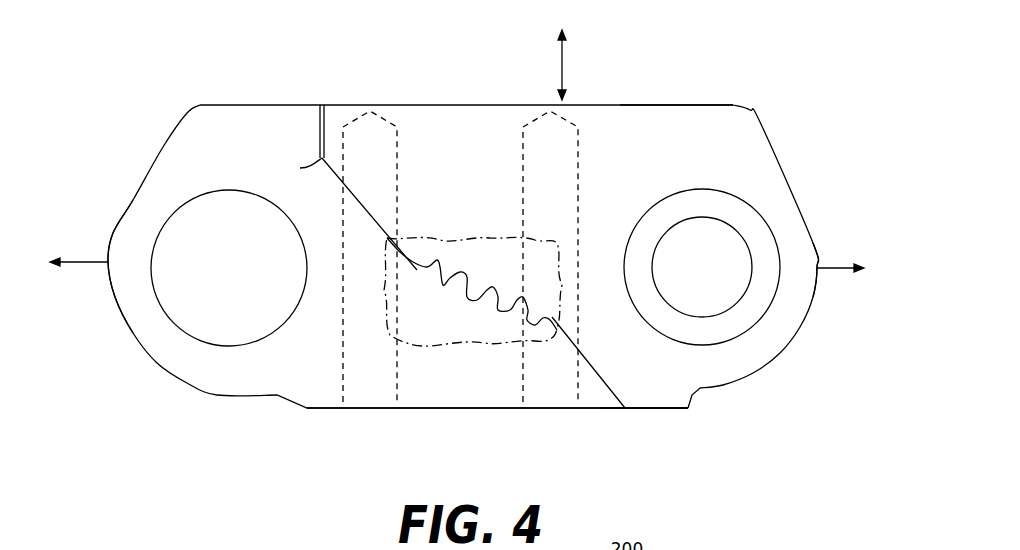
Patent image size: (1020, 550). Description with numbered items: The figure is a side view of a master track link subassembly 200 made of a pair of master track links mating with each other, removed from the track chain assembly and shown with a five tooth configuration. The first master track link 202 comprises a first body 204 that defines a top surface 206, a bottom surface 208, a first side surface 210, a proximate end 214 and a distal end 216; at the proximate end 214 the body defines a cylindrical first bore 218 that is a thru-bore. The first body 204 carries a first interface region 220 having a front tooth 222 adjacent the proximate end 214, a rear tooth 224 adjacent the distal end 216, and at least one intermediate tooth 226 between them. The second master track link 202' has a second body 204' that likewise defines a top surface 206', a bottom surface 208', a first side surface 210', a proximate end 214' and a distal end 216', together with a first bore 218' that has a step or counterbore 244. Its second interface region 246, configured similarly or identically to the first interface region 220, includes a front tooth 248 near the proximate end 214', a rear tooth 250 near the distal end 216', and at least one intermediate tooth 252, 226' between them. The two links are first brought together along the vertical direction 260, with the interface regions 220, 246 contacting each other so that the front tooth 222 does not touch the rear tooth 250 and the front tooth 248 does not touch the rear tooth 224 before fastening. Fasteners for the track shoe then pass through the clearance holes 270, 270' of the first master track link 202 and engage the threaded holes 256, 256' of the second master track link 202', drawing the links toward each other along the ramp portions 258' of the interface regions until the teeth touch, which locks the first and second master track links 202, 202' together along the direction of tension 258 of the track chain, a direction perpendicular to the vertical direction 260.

The master track link subassembly 200 is at (453, 77).
The first master track link 202 is at (387, 265).
The first body 204 is at (387, 265).
The second master track link 202' is at (740, 250).
The second body 204' is at (740, 250).
The top surface 206 is at (466, 75).
The top surface 206' is at (693, 80).
The bottom surface 208 is at (497, 435).
The bottom surface 208' is at (683, 441).
The first side surface 210 is at (215, 145).
The first side surface 210' is at (649, 148).
The proximate end 214 is at (87, 279).
The proximate end 214' is at (847, 255).
The distal end 216 is at (485, 301).
The distal end 216' is at (349, 88).
The first bore 218 is at (194, 241).
The first bore 218' is at (766, 268).
The first interface region 220 is at (397, 328).
The front tooth 222 is at (431, 246).
The rear tooth 224 is at (548, 324).
The intermediate tooth 226 is at (489, 223).
The intermediate tooth 226' is at (542, 242).
The counterbore 244 is at (742, 320).
The second interface region 246 is at (547, 245).
The front tooth 248 is at (478, 343).
The rear tooth 250 is at (415, 267).
The intermediate tooth 252 is at (448, 277).
The threaded hole 256 is at (388, 70).
The threaded hole 256' is at (596, 86).
The direction of tension 258 is at (468, 218).
The ramp portion 258' is at (629, 365).
The vertical direction 260 is at (563, 62).
The clearance hole 270 is at (370, 290).
The clearance hole 270' is at (558, 282).